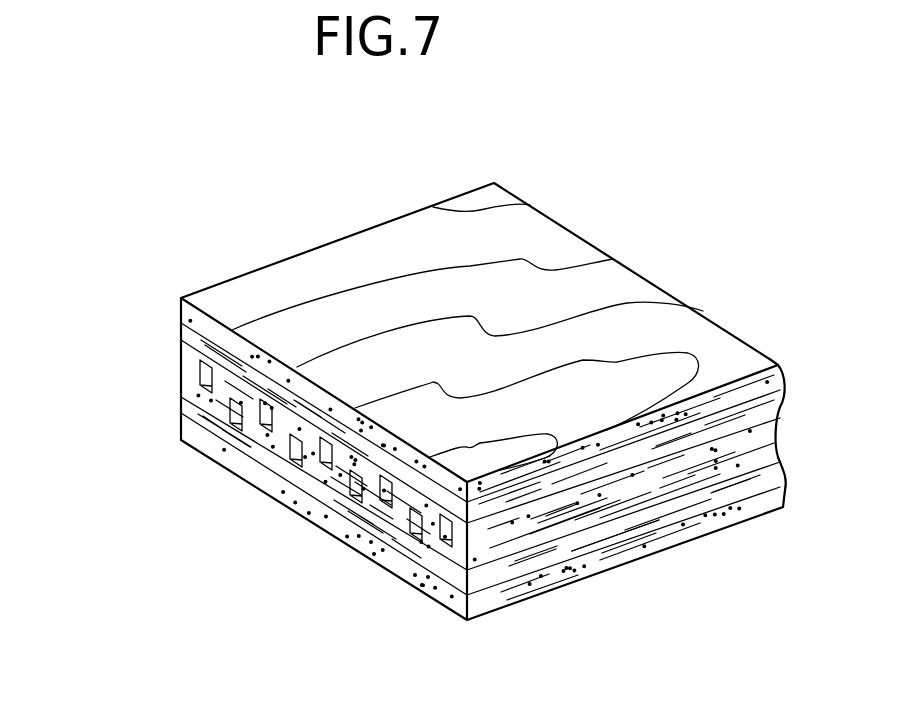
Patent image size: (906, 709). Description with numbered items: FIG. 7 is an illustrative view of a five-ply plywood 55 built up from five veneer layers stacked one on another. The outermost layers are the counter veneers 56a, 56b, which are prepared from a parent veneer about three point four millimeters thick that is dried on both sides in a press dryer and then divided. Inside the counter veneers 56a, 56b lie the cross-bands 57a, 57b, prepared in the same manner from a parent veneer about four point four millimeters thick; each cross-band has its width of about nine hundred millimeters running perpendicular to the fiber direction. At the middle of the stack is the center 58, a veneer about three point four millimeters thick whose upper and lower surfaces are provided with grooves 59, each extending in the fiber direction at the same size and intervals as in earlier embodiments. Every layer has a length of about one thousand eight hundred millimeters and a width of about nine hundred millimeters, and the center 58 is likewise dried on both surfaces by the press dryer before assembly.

The laminated panel 55 is at (313, 237).
The counter veneer 56a is at (433, 595).
The counter veneer 56b is at (181, 304).
The cross-band 57a is at (180, 405).
The cross-band 57b is at (180, 336).
The center 58 is at (677, 482).
The grooves 59 is at (410, 512).